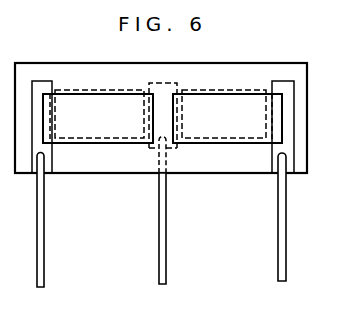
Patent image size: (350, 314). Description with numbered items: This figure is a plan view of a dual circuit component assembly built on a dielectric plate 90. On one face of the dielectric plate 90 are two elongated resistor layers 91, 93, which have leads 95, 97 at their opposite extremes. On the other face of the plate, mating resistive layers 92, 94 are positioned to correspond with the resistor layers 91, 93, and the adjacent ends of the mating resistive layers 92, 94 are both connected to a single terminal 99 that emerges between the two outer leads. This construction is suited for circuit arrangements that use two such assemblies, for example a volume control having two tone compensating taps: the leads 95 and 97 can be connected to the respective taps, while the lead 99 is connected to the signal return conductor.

The dielectric plate 90 is at (282, 68).
The elongated resistor layer 91 is at (93, 103).
The mating resistive layer 92 is at (112, 87).
The elongated resistor layer 93 is at (210, 106).
The mating resistive layer 94 is at (228, 90).
The lead 95 is at (44, 219).
The lead 97 is at (286, 219).
The single terminal 99 is at (166, 219).